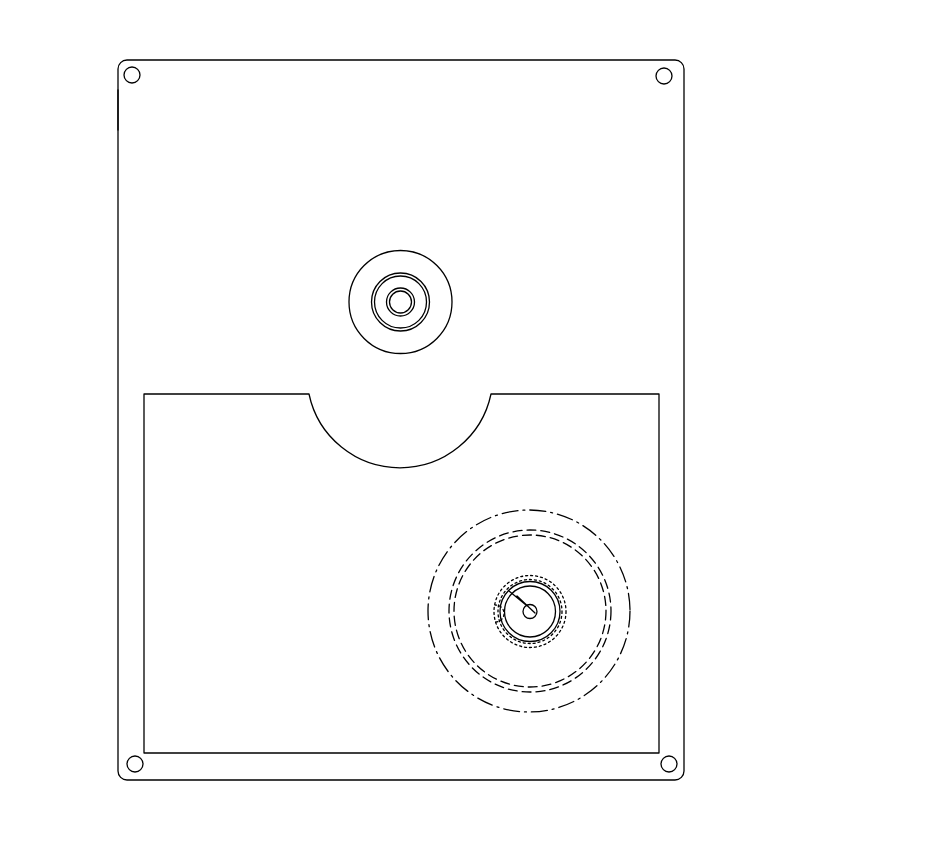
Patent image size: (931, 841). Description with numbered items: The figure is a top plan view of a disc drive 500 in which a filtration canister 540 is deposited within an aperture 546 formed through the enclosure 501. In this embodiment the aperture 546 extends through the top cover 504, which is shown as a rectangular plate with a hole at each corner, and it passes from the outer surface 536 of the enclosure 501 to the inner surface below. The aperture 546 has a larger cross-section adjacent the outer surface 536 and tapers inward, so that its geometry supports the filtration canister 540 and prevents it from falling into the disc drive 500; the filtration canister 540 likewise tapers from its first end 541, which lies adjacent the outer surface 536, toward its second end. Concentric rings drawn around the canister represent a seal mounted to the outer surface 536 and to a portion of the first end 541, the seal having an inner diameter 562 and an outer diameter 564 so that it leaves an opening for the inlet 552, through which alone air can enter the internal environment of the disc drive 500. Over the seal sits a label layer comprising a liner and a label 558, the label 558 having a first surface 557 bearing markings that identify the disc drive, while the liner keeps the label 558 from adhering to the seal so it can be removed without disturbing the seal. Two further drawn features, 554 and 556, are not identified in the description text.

The disc drive 500 is at (702, 60).
The enclosure 501 is at (105, 112).
The top cover 504 is at (118, 188).
The outer surface 536 is at (288, 78).
The first surface 557 is at (635, 442).
The label 558 is at (659, 457).
The outer diameter 564 is at (434, 587).
The aperture 546 is at (493, 687).
The filtration canister 540 is at (531, 690).
The dotted ring 556 is at (556, 580).
The tab 554 is at (489, 616).
The inner diameter 562 is at (553, 606).
The inlet 552 is at (536, 619).
The first end 541 is at (530, 604).